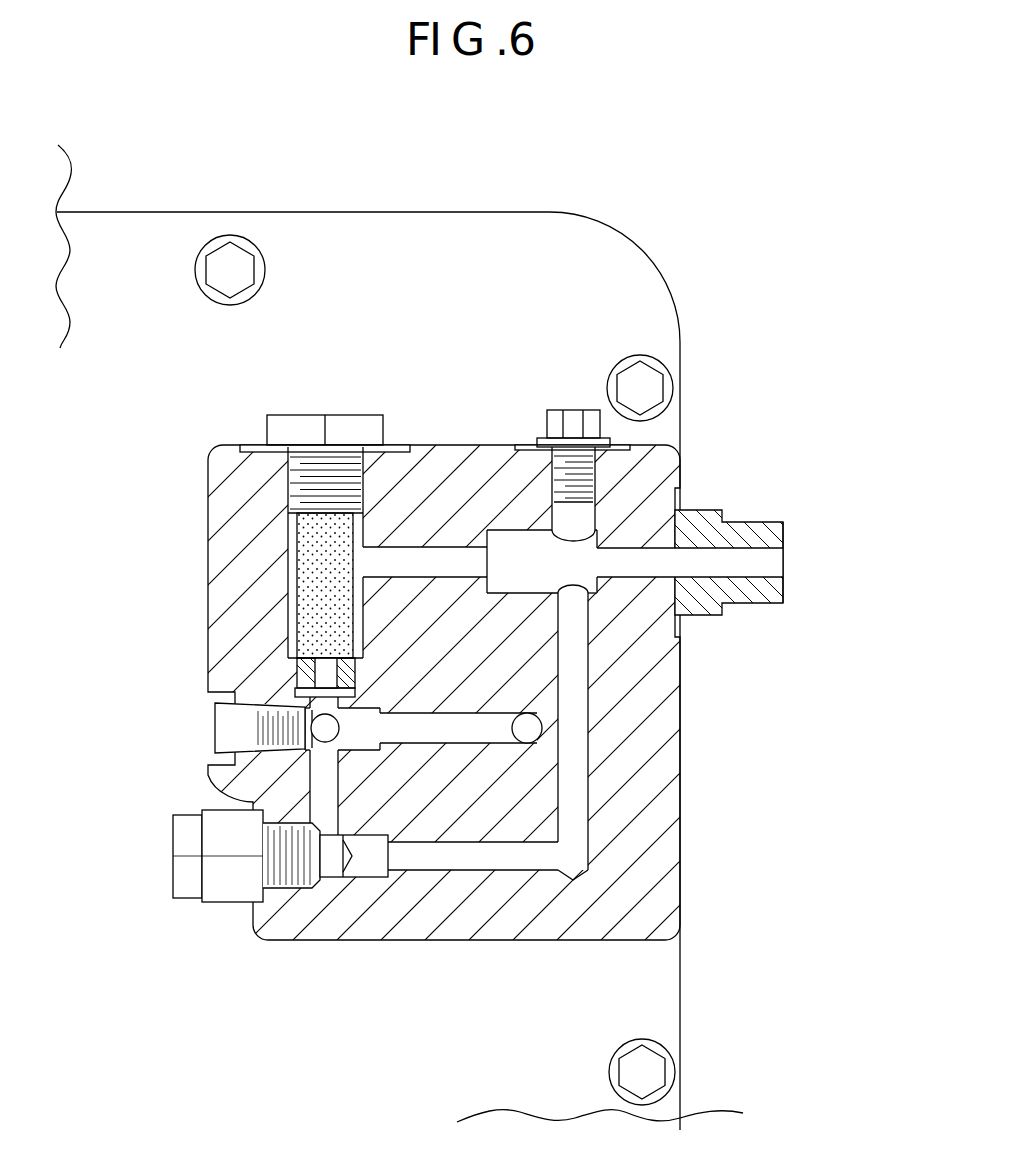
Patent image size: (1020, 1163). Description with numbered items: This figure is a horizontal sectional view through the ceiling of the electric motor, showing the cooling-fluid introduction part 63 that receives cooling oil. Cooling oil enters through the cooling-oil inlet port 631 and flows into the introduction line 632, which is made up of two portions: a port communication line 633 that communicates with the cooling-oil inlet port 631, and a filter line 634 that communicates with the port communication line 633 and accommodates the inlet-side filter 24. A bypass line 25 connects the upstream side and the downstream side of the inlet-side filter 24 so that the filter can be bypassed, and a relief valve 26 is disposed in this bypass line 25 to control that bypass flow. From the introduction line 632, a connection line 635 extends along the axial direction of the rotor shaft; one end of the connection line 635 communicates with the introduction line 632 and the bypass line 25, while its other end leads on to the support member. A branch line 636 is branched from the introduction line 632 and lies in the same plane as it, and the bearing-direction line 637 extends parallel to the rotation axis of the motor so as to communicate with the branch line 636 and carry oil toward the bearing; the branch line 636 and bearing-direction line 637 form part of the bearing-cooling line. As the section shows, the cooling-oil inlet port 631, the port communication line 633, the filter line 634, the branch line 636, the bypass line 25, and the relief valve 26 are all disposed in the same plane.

The cooling-fluid introduction part 63 is at (433, 212).
The introduction line 632 is at (435, 532).
The filter line 634 is at (356, 530).
The port communication line 633 is at (458, 556).
The inlet-side filter 24 is at (322, 568).
The cooling-oil inlet port 631 is at (770, 556).
The connection line 635 is at (318, 716).
The branch line 636 is at (456, 724).
The bearing-direction line 637 is at (540, 725).
The relief valve 26 is at (173, 838).
The bypass line 25 is at (510, 866).